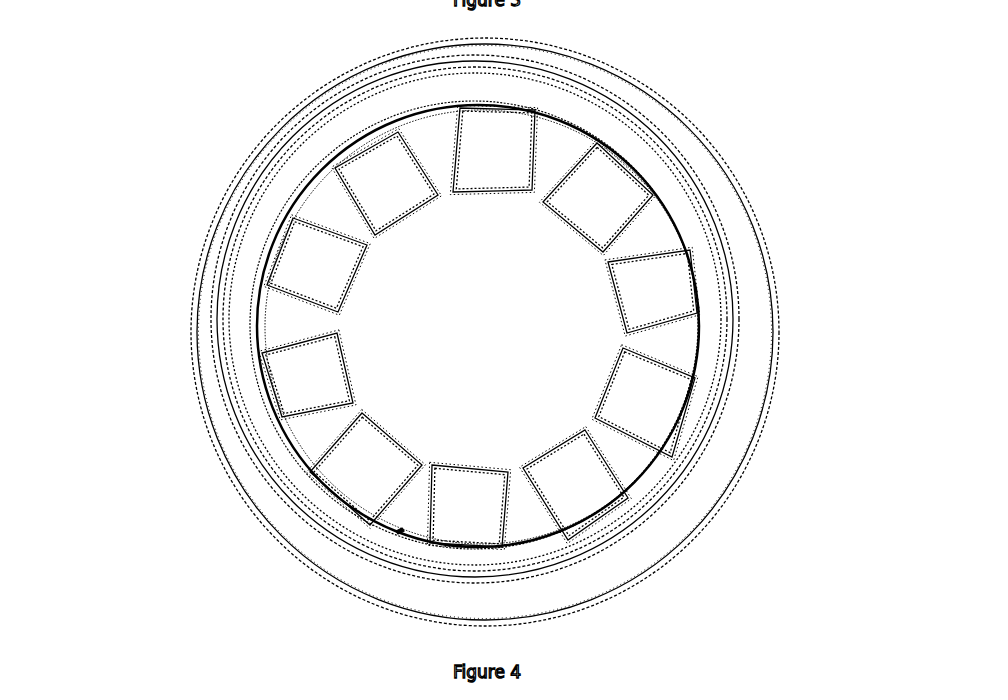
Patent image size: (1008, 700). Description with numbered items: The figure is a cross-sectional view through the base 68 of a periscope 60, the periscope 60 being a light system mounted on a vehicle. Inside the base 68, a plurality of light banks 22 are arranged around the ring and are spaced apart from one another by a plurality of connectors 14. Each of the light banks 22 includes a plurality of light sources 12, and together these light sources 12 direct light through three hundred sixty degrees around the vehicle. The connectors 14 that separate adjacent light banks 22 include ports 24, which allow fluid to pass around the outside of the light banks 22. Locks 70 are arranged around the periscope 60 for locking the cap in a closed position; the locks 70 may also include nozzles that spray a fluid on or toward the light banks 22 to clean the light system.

The periscope 60 is at (124, 78).
The base 68 is at (783, 345).
The connectors 14 is at (420, 125).
The light sources 12 is at (380, 168).
The light bank 22 is at (479, 327).
The locks 70 is at (247, 380).
The ports 24 is at (397, 523).